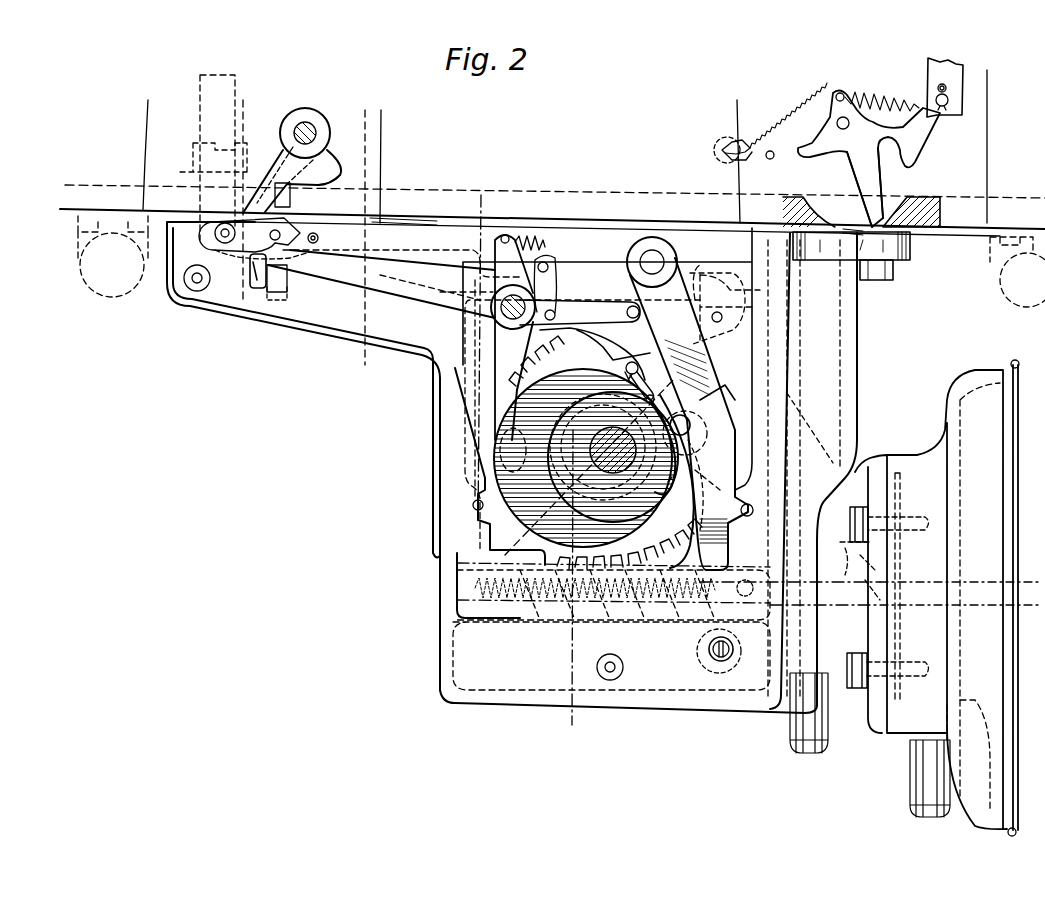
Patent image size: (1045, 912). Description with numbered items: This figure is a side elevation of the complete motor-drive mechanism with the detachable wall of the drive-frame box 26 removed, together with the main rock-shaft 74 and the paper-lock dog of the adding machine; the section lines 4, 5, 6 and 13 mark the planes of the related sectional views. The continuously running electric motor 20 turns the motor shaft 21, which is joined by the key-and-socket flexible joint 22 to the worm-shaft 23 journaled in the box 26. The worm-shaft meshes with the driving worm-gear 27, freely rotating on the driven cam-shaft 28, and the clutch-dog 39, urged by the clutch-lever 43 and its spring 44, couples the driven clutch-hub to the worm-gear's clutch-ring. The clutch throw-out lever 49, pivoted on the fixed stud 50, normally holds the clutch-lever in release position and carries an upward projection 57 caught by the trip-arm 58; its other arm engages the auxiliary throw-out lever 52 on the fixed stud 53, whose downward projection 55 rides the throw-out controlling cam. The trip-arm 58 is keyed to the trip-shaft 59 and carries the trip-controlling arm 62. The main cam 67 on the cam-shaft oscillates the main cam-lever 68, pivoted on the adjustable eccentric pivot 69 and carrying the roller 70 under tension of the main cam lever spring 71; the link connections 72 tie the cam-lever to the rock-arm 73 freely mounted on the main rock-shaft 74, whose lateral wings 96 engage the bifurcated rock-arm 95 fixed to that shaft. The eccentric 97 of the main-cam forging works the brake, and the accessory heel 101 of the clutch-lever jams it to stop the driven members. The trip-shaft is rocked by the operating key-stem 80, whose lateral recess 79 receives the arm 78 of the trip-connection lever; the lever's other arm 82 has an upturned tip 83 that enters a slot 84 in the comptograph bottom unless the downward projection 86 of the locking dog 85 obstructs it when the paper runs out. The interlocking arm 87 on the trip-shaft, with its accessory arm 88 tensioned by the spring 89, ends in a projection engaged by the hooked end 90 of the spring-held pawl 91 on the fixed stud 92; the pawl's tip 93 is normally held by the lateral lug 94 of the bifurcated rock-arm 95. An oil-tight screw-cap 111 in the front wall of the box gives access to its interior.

The section line 4— 4 is at (356, 114).
The section line 5— 5 is at (658, 385).
The section line 6— 6 is at (491, 209).
The section line 13— 13 is at (237, 110).
The electric motor 20 is at (947, 598).
The motor shaft 21 is at (973, 720).
The key-and-socket flexible joint 22 is at (870, 735).
The worm-shaft 23 is at (855, 545).
The drive-frame box 26 is at (783, 368).
The driving worm-gear 27 is at (605, 452).
The driven cam-shaft 28 is at (626, 455).
The clutch-dog 39 is at (652, 402).
The pawl 43 is at (645, 378).
The pawl spring 44 is at (614, 373).
The clutch throw-out lever 49 is at (727, 380).
The fixed stud 50 is at (712, 340).
The auxiliary throw-out lever 52 is at (592, 349).
The fixed stud 53 is at (560, 272).
The downward projection 55 is at (613, 345).
The upward projection 57 is at (718, 305).
The trip-arm 58 is at (580, 308).
The trip-shaft 59 is at (500, 290).
The trip-controlling arm 62 is at (515, 381).
The main cam 67 is at (585, 458).
The main cam-lever 68 is at (687, 481).
The adjustable eccentric pivot 69 is at (714, 661).
The roller 70 is at (692, 432).
The main cam lever spring 71 is at (666, 626).
The link connections 72 is at (612, 240).
The rock-arm 73 is at (240, 224).
The main rock-shaft 74 is at (308, 120).
The arm 78 is at (203, 313).
The lateral recess 79 is at (223, 215).
The operating key-stem 80 is at (200, 80).
The arm 82 is at (875, 287).
The upwardly projecting tip 83 is at (905, 268).
The slot 84 is at (915, 198).
The locking dog 85 is at (838, 142).
The downward projection 86 is at (860, 176).
The interlocking arm 87 is at (444, 305).
The accessory arm 88 is at (508, 238).
The spring 89 is at (540, 245).
The hooked end 90 is at (267, 290).
The interlocking spring-held pawl 91 is at (287, 290).
The fixed stud 92 is at (275, 232).
The upwardly projecting tip 93 is at (245, 192).
The lateral lug 94 is at (272, 183).
The bifurcated rock-arm 95 is at (330, 134).
The lateral wings 96 is at (250, 170).
The eccentric 97 is at (655, 498).
The accessory heel 101 is at (668, 476).
The oil-tight screw-cap 111 is at (433, 397).